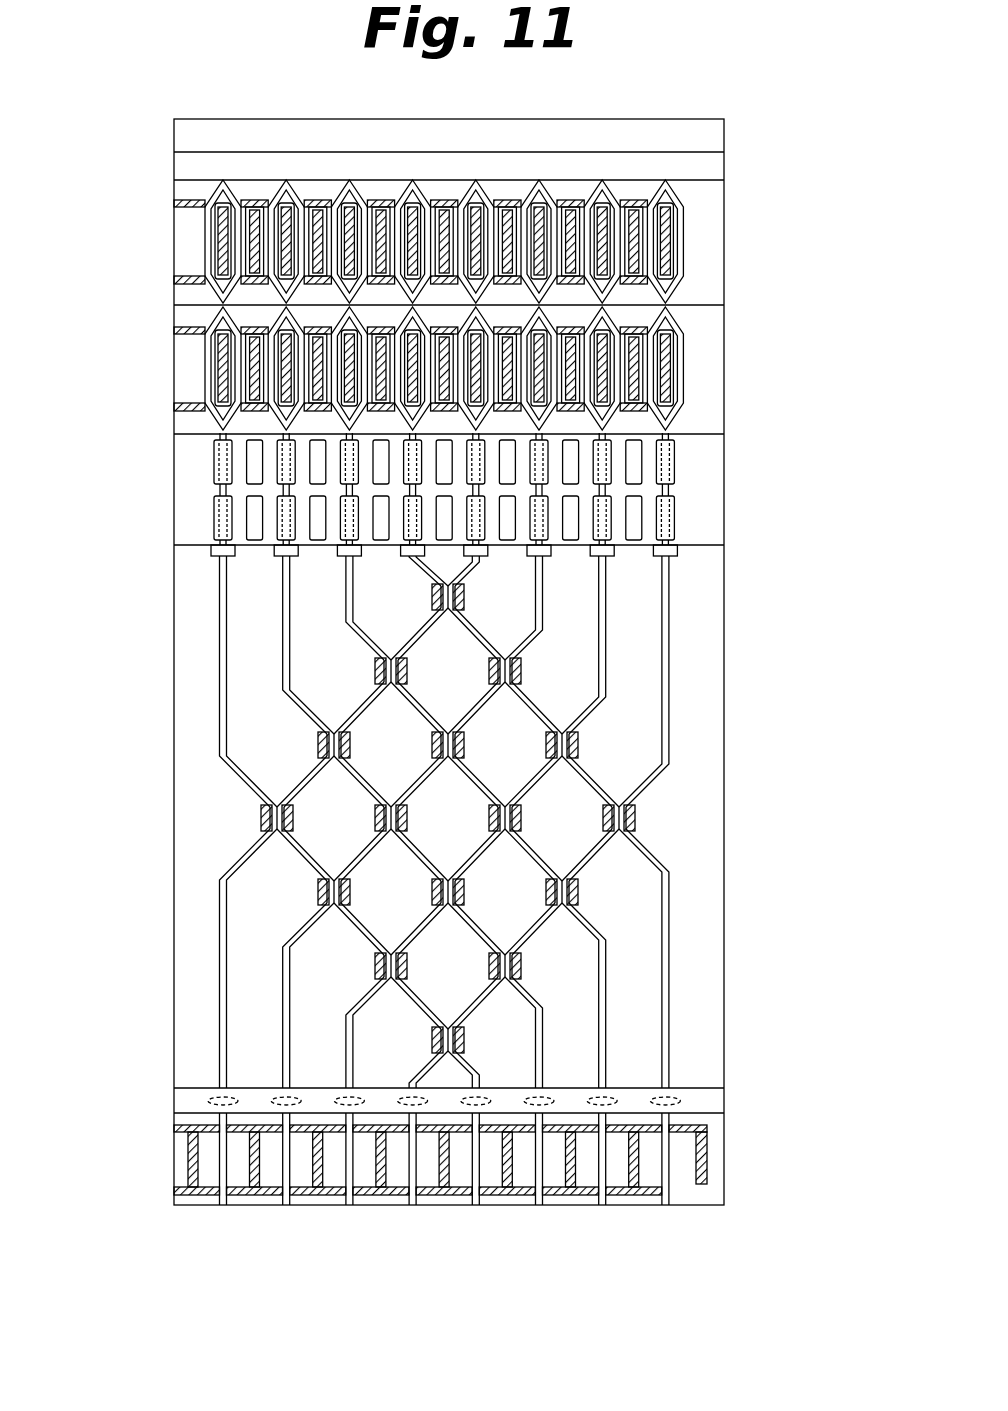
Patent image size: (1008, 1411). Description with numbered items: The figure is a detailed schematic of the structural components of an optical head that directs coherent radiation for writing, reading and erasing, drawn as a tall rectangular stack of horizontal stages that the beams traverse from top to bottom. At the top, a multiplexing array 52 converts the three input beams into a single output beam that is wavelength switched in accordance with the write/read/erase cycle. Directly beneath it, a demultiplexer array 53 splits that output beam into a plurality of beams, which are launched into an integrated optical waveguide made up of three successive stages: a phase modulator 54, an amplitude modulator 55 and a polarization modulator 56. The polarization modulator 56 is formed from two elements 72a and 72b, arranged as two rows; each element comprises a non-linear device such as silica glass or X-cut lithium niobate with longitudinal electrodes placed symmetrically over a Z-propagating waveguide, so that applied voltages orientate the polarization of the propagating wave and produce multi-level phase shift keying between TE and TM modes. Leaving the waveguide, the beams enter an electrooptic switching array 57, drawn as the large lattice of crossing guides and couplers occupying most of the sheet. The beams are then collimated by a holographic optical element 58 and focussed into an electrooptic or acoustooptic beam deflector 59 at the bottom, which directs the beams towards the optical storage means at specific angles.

The multiplexing array 52 is at (724, 133).
The demultiplexer array 53 is at (724, 168).
The phase modulator 54 is at (724, 256).
The amplitude modulator 55 is at (724, 380).
The polarization modulator 56 is at (459, 494).
The electrooptic switching array 57 is at (724, 795).
The holographic optical element 58 is at (724, 1103).
The electrooptic or acoustooptic beam deflector 59 is at (724, 1163).
The element of polarization modulator 72a is at (214, 458).
The element of polarization modulator 72b is at (214, 520).